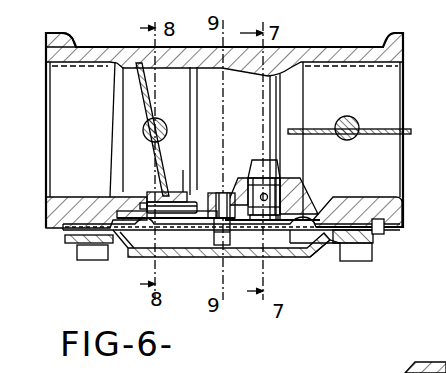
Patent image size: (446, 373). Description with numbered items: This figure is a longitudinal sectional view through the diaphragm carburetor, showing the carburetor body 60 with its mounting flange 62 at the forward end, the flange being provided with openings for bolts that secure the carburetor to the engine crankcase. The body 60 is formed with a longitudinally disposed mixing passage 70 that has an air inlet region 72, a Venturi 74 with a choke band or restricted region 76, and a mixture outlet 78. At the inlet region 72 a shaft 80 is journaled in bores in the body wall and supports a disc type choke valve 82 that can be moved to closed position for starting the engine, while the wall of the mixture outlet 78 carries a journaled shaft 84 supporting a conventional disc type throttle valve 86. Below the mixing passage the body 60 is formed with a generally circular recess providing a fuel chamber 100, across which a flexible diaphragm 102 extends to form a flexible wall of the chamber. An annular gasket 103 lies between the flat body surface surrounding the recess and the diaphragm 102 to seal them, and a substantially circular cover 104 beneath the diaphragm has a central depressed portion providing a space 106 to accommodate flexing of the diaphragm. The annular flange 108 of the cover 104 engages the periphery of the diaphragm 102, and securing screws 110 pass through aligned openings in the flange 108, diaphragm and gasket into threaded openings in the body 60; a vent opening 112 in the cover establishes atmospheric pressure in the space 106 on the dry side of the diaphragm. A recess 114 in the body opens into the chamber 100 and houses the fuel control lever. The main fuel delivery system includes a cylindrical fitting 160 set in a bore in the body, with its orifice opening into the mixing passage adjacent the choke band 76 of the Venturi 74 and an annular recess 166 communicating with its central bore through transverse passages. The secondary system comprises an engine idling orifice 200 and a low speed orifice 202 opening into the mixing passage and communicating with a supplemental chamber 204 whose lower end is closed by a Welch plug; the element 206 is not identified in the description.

The carburetor body 60 is at (307, 45).
The mounting flange 62 is at (54, 33).
The mixing passage 70 is at (178, 98).
The air inlet region 72 is at (396, 70).
The Venturi 74 is at (252, 100).
The choke band 76 is at (284, 98).
The mixture outlet 78 is at (76, 123).
The shaft 80 is at (353, 120).
The choke valve 82 is at (364, 134).
The shaft 84 is at (143, 131).
The throttle valve 86 is at (141, 78).
The fuel chamber 100 is at (333, 198).
The diaphragm 102 is at (292, 240).
The annular gasket 103 is at (378, 226).
The cover 104 is at (150, 264).
The space 106 is at (325, 257).
The flange 108 is at (76, 248).
The securing screws 110 is at (77, 258).
The vent opening 112 is at (217, 262).
The recess 114 is at (221, 191).
The fitting 160 is at (249, 162).
The annular recess 166 is at (300, 192).
The engine idling orifice 200 is at (158, 192).
The low speed orifice 202 is at (182, 172).
The supplemental chamber 204 is at (147, 210).
The step 206 is at (136, 254).